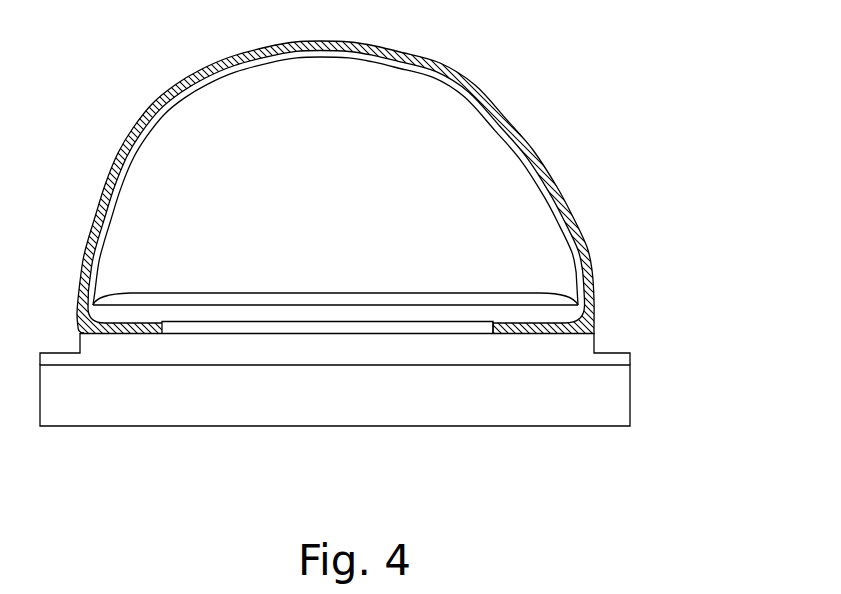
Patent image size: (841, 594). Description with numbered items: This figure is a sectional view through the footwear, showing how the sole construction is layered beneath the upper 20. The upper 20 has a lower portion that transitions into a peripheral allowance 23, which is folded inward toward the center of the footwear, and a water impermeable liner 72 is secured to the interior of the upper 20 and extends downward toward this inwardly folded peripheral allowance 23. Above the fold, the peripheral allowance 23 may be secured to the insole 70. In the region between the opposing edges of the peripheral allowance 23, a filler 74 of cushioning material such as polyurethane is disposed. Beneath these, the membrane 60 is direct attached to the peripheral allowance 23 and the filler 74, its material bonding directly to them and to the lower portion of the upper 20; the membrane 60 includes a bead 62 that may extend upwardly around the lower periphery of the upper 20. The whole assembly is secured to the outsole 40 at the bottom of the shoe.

The upper 20 is at (440, 63).
The water impermeable liner 72 is at (507, 122).
The insole 70 is at (499, 314).
The filler 74 is at (477, 328).
The peripheral allowance 23 is at (493, 322).
The membrane 60 is at (547, 352).
The bead 62 is at (618, 353).
The outsole 40 is at (624, 393).